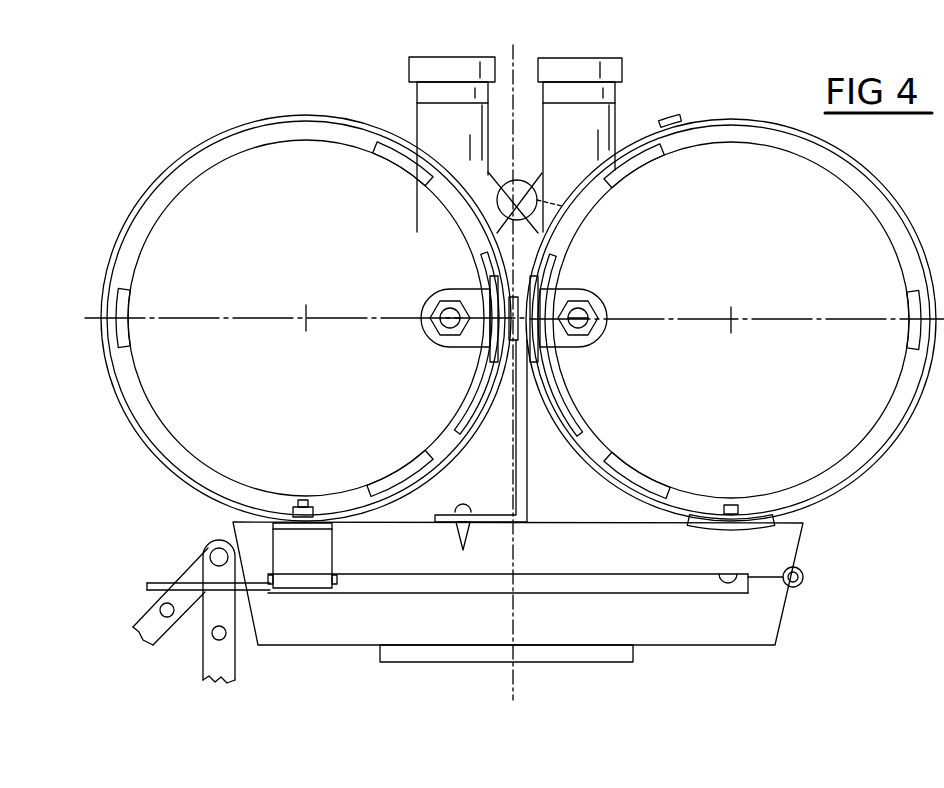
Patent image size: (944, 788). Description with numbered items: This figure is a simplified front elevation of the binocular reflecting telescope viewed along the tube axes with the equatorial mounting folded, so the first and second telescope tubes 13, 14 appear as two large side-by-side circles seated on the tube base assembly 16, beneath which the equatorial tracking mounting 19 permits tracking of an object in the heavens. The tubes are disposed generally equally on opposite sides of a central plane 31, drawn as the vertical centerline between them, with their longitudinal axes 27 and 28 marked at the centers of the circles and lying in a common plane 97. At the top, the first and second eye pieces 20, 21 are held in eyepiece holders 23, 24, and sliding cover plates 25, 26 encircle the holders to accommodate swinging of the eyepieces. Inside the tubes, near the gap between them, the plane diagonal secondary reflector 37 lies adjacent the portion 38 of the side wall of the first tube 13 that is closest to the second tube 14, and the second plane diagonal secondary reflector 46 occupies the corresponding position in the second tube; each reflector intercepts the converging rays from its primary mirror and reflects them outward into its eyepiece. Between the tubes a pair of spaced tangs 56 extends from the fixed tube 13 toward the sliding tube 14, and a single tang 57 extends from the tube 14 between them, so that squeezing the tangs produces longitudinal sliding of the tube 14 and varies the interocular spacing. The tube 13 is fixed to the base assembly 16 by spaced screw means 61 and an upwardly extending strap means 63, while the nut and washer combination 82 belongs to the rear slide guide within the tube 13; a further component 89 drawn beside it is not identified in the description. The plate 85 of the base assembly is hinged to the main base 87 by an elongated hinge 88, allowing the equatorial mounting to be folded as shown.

The first telescope tube 13 is at (862, 173).
The second telescope tube 14 is at (262, 124).
The tube base assembly 16 is at (805, 628).
The equatorial tracking mounting 19 is at (466, 664).
The first eye piece 20 is at (585, 70).
The second eye piece 21 is at (447, 64).
The eyepiece holder 23 is at (612, 118).
The eyepiece holder 24 is at (418, 102).
The sliding cover plate 25 is at (671, 118).
The sliding cover plate 26 is at (400, 122).
The longitudinal axis 27 is at (733, 324).
The longitudinal axis 28 is at (311, 322).
The central plane 31 is at (515, 62).
The plane diagonal secondary reflector 37 is at (618, 296).
The portion of the side wall 38 is at (549, 250).
The second plane diagonal secondary reflector 46 is at (418, 296).
The pair of spaced tangs 56 is at (527, 196).
The single tang 57 is at (498, 188).
The screw means 61 is at (734, 583).
The strap means 63 is at (528, 483).
The nut and washer combination 82 is at (300, 565).
The plate 85 is at (645, 548).
The main base 87 is at (690, 630).
The elongated hinge 88 is at (803, 575).
The bracket 89 is at (334, 570).
The plane 97 is at (93, 360).